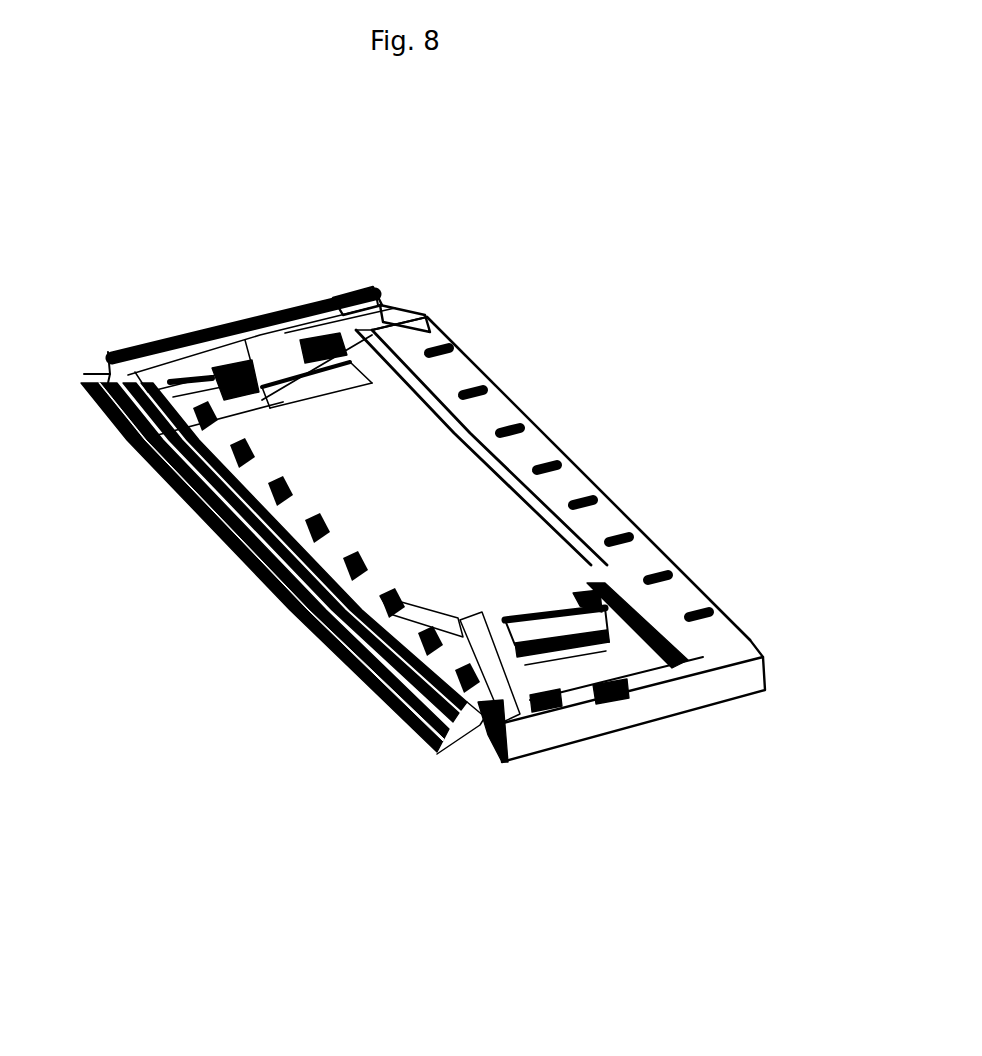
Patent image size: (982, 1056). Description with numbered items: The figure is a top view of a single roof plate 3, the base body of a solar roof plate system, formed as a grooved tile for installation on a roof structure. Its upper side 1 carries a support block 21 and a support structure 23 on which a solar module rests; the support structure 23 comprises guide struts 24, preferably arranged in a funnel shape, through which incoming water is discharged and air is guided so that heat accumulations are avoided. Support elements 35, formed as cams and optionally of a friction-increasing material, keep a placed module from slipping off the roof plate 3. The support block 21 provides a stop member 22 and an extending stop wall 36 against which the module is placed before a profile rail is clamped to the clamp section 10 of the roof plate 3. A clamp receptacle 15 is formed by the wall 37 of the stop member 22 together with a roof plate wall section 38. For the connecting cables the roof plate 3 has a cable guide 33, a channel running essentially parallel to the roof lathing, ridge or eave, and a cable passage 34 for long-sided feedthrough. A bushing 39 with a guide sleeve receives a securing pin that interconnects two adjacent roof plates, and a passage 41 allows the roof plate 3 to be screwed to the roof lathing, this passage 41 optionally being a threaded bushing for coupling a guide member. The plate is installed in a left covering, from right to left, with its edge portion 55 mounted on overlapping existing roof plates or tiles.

The upper side 1 is at (497, 513).
The roof plate 3 is at (283, 660).
The clamp section 10 is at (705, 695).
The clamp receptacle 15 is at (383, 310).
The support block 21 is at (423, 370).
The stop member 22 is at (423, 317).
The support structure 23 is at (630, 612).
The guide struts 24 is at (607, 575).
The cable guide 33 is at (205, 358).
The cable passage 34 is at (243, 323).
The support element 35 is at (522, 417).
The stop wall 36 is at (423, 317).
The wall 37 is at (280, 363).
The roof plate wall section 38 is at (323, 340).
The bushing 39 is at (503, 762).
The passage 41 is at (160, 470).
The edge portion 55 is at (270, 588).